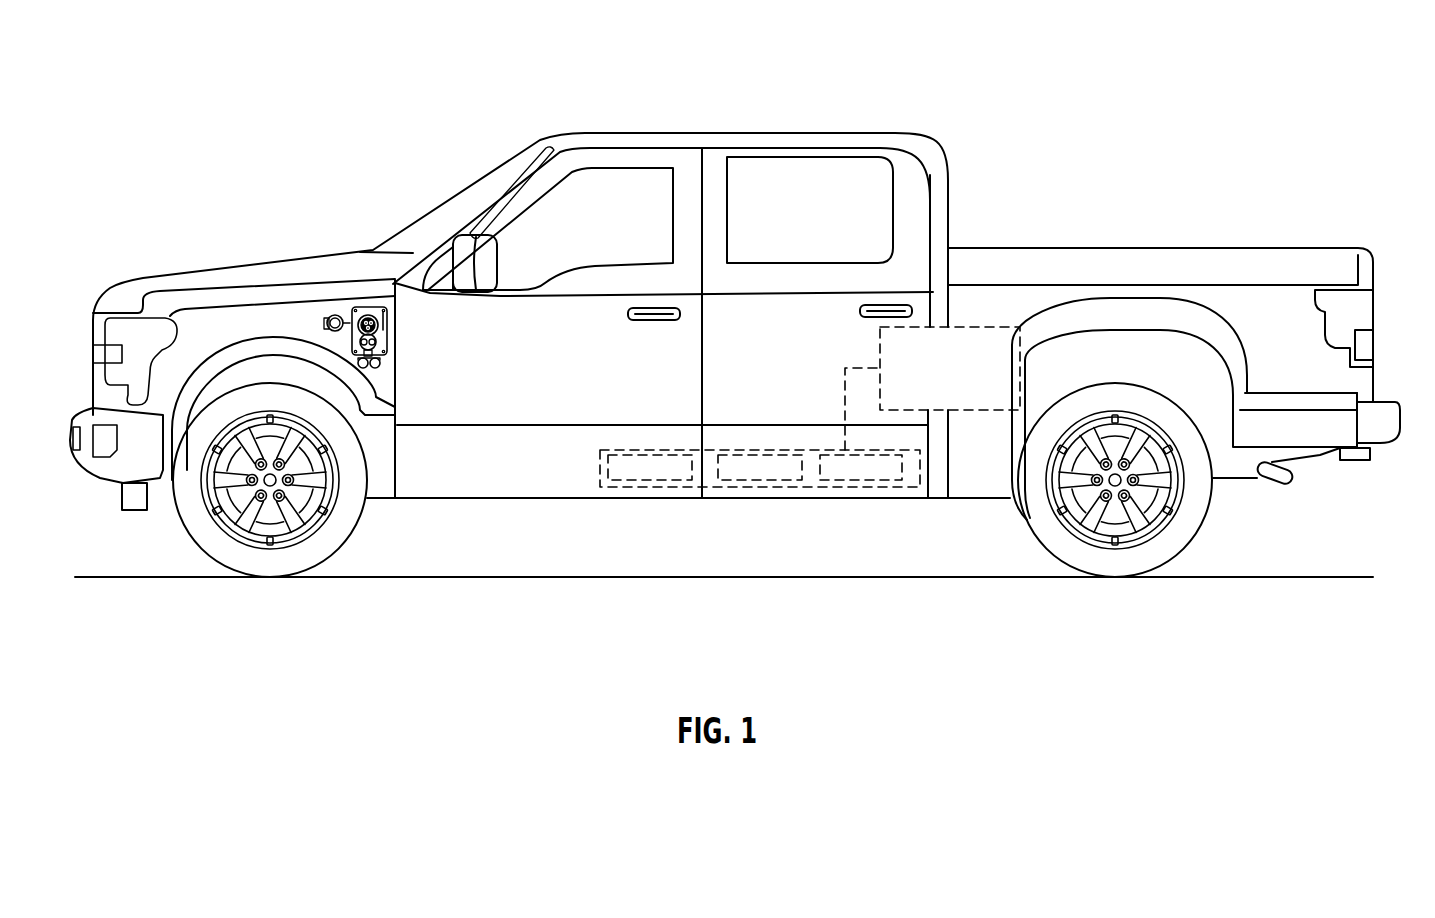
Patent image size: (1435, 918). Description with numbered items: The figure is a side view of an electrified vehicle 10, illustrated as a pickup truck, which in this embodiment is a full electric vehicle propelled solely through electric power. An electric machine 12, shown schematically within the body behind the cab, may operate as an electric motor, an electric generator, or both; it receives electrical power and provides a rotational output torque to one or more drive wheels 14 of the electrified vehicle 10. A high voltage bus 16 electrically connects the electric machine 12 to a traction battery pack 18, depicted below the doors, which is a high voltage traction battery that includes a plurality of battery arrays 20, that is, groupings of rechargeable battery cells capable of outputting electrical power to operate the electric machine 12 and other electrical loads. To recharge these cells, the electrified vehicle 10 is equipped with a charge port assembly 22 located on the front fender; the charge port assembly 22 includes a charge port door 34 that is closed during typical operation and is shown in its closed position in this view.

The electrified vehicle 10 is at (830, 84).
The electric machine 12 is at (983, 327).
The drive wheels 14 is at (262, 562).
The high voltage bus 16 is at (845, 388).
The traction battery pack 18 is at (812, 467).
The battery arrays 20 is at (635, 470).
The charge port assembly 22 is at (365, 298).
The charge port door 34 is at (324, 320).